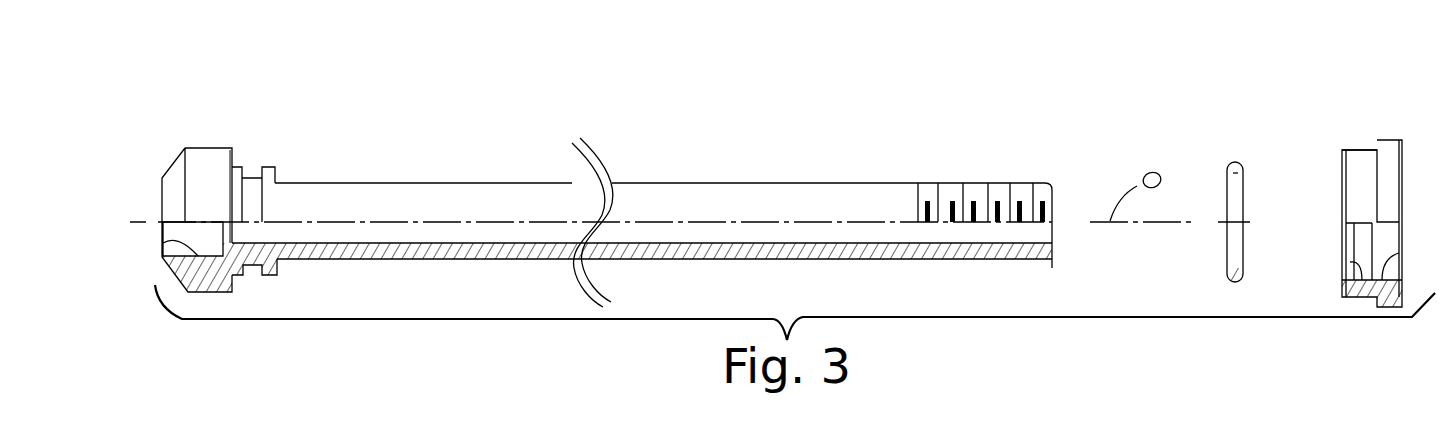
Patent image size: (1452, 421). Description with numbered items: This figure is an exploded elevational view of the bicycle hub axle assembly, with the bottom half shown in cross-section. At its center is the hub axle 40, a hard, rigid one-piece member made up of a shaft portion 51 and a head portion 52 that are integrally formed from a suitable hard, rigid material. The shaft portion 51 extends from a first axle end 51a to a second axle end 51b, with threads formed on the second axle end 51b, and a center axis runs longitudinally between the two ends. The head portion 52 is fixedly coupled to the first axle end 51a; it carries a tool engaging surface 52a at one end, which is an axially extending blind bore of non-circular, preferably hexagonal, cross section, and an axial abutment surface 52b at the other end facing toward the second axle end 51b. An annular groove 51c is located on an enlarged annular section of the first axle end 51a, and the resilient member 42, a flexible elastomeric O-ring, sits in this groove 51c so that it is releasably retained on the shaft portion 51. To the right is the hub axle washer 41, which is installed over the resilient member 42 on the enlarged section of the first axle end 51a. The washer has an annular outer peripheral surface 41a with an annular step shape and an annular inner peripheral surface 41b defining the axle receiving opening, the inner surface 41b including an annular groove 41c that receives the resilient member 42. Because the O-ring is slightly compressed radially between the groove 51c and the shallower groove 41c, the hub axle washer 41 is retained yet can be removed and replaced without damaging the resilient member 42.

The hub axle 40 is at (987, 132).
The hub axle washer 41 is at (1393, 116).
The annular outer peripheral surface 41a is at (1359, 150).
The annular inner peripheral surface 41b is at (1385, 275).
The annular groove 41c is at (1346, 262).
The resilient member 42 is at (1249, 143).
The shaft portion 51 is at (807, 182).
The first axle end 51a is at (323, 179).
The second axle end 51b is at (993, 185).
The annular groove 51c is at (252, 272).
The head portion 52 is at (210, 148).
The tool engaging surface 52a is at (163, 242).
The axial abutment surface 52b is at (232, 158).